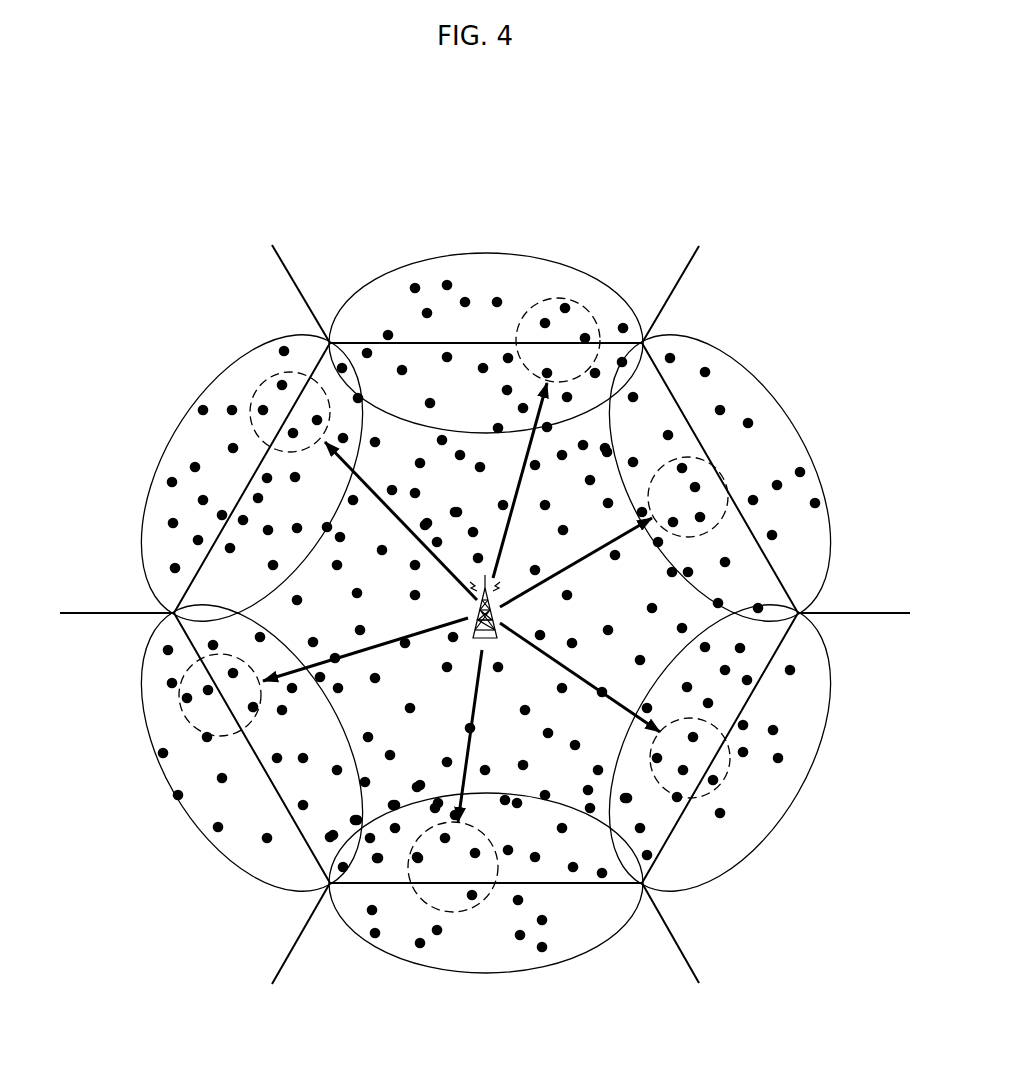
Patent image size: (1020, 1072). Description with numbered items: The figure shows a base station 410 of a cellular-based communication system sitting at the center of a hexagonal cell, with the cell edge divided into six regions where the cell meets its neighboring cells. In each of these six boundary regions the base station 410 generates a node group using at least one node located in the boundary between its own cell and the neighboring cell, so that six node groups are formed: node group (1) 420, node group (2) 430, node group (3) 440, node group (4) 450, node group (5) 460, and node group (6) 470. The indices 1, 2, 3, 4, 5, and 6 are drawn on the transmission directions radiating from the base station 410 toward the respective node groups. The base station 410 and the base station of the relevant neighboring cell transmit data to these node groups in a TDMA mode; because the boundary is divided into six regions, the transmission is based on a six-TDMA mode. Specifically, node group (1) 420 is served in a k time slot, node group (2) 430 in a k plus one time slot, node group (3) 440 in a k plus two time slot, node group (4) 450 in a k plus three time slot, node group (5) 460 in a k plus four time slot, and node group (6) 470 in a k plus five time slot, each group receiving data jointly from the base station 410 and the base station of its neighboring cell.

The base station 410 is at (500, 617).
The node group (1) 420 is at (468, 912).
The node group (2) 430 is at (180, 715).
The node group (3) 440 is at (268, 378).
The node group (4) 450 is at (558, 298).
The node group (5) 460 is at (722, 470).
The node group (6) 470 is at (727, 772).
The node group (1) index 1 is at (470, 736).
The node group (2) index 2 is at (365, 645).
The node group (3) index 3 is at (401, 521).
The node group (4) index 4 is at (520, 480).
The node group (5) index 5 is at (576, 562).
The node group (6) index 6 is at (580, 677).